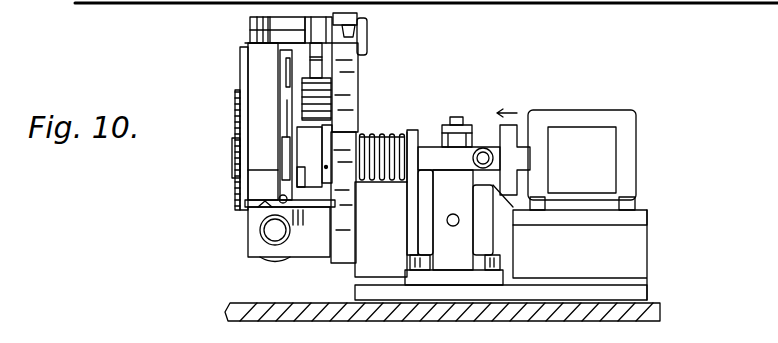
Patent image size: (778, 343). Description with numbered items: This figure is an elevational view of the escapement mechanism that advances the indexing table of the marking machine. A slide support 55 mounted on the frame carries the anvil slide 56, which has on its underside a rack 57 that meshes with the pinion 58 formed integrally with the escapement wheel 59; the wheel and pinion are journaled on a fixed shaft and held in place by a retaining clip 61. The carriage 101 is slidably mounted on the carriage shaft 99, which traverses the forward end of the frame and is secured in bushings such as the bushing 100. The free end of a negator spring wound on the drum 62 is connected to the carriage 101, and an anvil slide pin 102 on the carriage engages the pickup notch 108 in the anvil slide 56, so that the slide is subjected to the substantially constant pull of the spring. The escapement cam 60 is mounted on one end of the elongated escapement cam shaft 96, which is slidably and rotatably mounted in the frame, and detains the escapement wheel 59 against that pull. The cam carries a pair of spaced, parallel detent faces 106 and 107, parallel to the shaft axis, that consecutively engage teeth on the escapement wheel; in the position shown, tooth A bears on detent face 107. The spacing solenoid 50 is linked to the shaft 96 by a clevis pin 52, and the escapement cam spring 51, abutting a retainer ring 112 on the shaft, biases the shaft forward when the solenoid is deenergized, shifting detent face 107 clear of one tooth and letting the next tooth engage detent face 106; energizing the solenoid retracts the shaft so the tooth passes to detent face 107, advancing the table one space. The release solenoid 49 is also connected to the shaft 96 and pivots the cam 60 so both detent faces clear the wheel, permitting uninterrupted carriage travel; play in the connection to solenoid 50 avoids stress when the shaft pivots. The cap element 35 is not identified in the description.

The cap screw 35 is at (362, 15).
The release solenoid 49 is at (485, 238).
The spacing solenoid 50 is at (577, 137).
The escapement cam spring 51 is at (392, 135).
The clevis pin 52 is at (482, 147).
The slide support 55 is at (353, 62).
The anvil slide 56 is at (351, 43).
The rack 57 is at (322, 68).
The pinion 58 is at (318, 107).
The escapement wheel 59 is at (288, 57).
The escapement cam 60 is at (310, 187).
The retaining clip 61 is at (260, 115).
The drum 62 is at (240, 147).
The escapement cam shaft 96 is at (326, 168).
The carriage shaft 99 is at (270, 229).
The bushing 100 is at (265, 238).
The carriage 101 is at (262, 60).
The anvil slide pin 102 is at (262, 33).
The detent face 106 is at (286, 170).
The detent face 107 is at (258, 176).
The pickup notch 108 is at (262, 15).
The retainer ring 112 is at (362, 180).